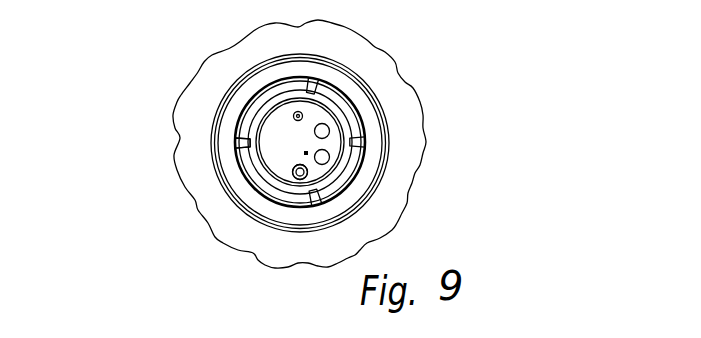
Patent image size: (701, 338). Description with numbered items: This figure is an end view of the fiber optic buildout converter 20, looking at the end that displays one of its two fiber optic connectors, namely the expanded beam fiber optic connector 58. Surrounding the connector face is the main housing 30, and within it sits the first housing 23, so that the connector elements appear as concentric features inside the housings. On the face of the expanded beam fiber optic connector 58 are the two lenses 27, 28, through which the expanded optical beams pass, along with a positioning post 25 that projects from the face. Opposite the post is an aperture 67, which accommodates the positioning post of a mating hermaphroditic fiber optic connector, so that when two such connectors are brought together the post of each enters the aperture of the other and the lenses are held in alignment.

The fiber optic buildout converter 20 is at (138, 52).
The main housing 30 is at (181, 96).
The first housing 23 is at (238, 132).
The positioning post 25 is at (312, 119).
The lens 28 is at (330, 127).
The lens 27 is at (331, 152).
The expanded beam fiber optic connector 58 is at (273, 151).
The aperture 67 is at (302, 182).